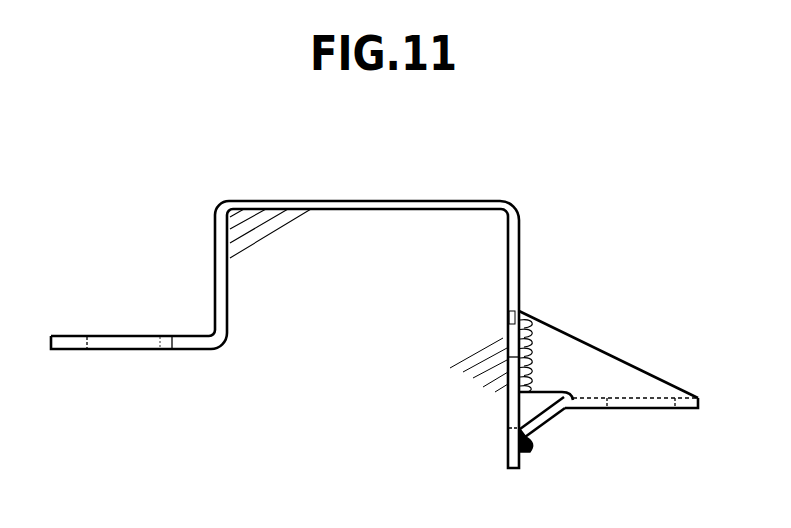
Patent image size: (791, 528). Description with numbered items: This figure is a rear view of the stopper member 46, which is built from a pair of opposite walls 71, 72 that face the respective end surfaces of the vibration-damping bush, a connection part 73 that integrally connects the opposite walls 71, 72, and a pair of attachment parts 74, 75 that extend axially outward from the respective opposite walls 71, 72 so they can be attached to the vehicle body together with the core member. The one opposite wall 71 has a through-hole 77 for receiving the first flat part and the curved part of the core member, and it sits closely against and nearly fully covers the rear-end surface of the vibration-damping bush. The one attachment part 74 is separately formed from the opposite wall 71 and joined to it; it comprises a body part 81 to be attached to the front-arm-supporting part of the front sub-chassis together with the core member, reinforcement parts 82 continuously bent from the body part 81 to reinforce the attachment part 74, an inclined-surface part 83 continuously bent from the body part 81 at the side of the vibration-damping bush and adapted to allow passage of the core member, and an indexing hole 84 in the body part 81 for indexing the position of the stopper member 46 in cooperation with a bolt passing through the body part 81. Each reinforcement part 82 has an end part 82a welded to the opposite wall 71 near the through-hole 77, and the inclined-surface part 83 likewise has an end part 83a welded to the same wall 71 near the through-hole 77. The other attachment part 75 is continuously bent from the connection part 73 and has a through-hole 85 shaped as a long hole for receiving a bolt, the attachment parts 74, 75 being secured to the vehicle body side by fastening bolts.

The stopper member 46 is at (124, 210).
The opposite wall 71 is at (508, 277).
The opposite wall 72 is at (227, 278).
The connection part 73 is at (362, 201).
The attachment part 74 is at (607, 337).
The attachment part 75 is at (56, 335).
The through-hole 77 is at (512, 316).
The body part 81 is at (692, 412).
The reinforcement part 82 is at (636, 363).
The end part 82a is at (509, 357).
The inclined-surface part 83 is at (550, 405).
The end part 83a is at (518, 431).
The indexing hole 84 is at (670, 402).
The through-hole 85 is at (163, 340).